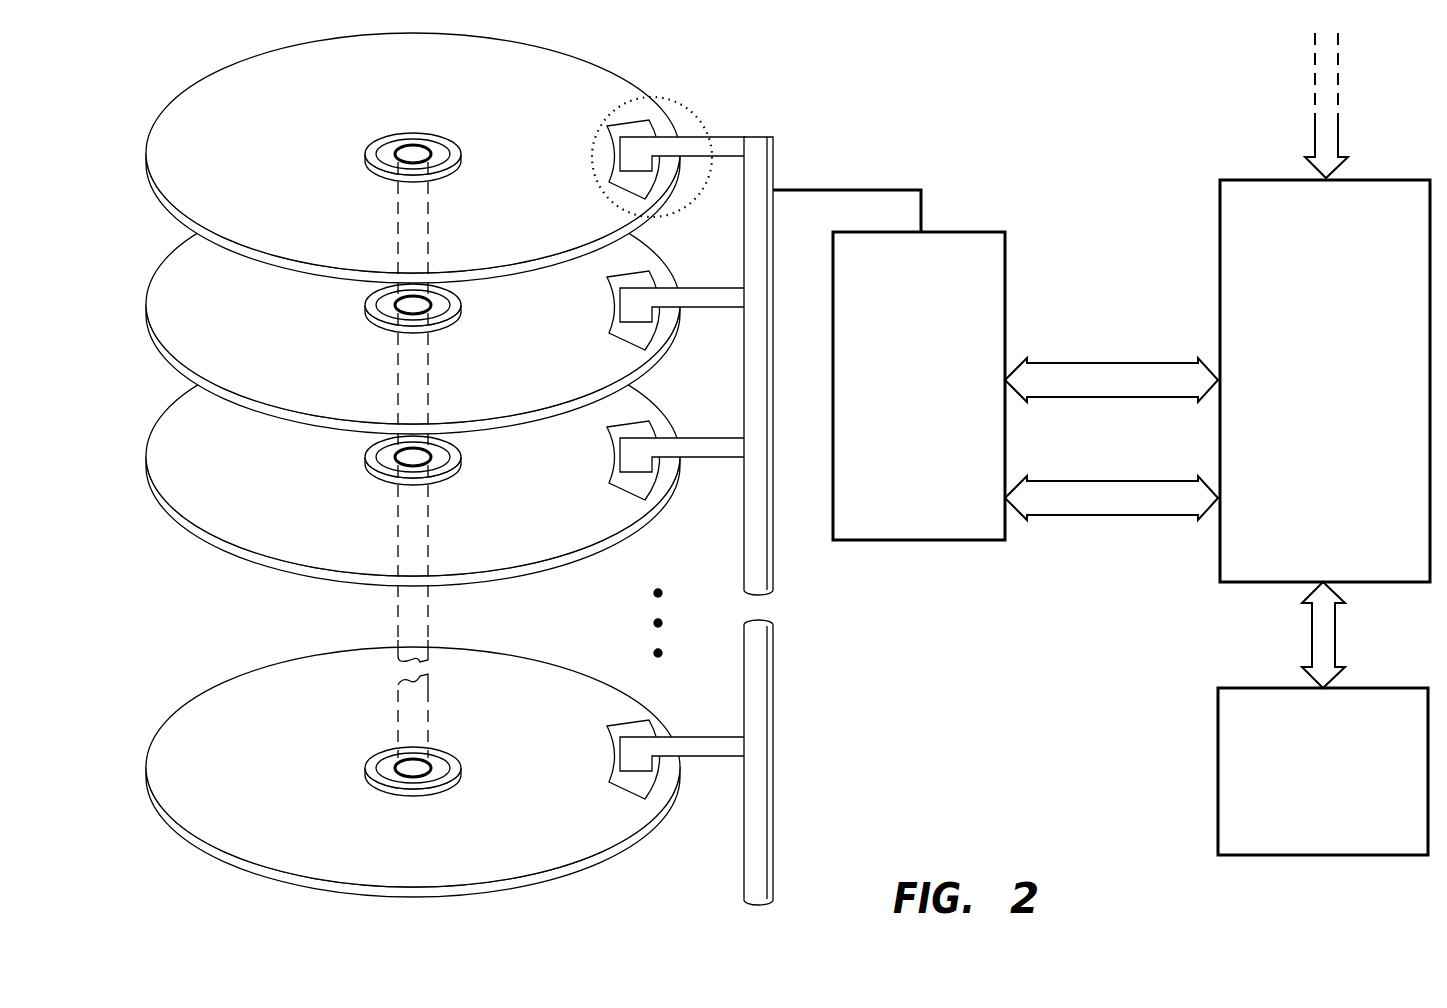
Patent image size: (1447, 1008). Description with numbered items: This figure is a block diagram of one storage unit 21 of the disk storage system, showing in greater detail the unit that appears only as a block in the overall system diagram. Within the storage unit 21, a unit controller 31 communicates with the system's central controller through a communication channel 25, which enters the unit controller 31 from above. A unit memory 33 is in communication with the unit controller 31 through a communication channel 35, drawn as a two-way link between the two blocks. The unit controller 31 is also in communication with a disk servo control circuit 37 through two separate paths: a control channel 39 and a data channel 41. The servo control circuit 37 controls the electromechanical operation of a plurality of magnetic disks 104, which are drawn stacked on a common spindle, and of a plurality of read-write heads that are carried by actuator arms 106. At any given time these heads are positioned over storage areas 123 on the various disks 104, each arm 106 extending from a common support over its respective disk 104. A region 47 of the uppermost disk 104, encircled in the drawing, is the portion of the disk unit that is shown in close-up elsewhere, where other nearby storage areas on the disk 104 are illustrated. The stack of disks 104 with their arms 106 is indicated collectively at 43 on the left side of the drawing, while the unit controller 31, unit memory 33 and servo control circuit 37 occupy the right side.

The storage unit 21 is at (950, 92).
The communication channel 25 is at (1313, 132).
The unit controller 31 is at (1220, 208).
The unit memory 33 is at (1218, 776).
The communication channel 35 is at (1312, 644).
The disk servo control circuit 37 is at (963, 232).
The control channel 39 is at (1080, 363).
The data channel 41 is at (1085, 482).
The disk stack 43 is at (158, 76).
The region 47 is at (702, 75).
The magnetic disks 104 is at (258, 154).
The actuator arms 106 is at (738, 143).
The storage areas 123 is at (611, 167).